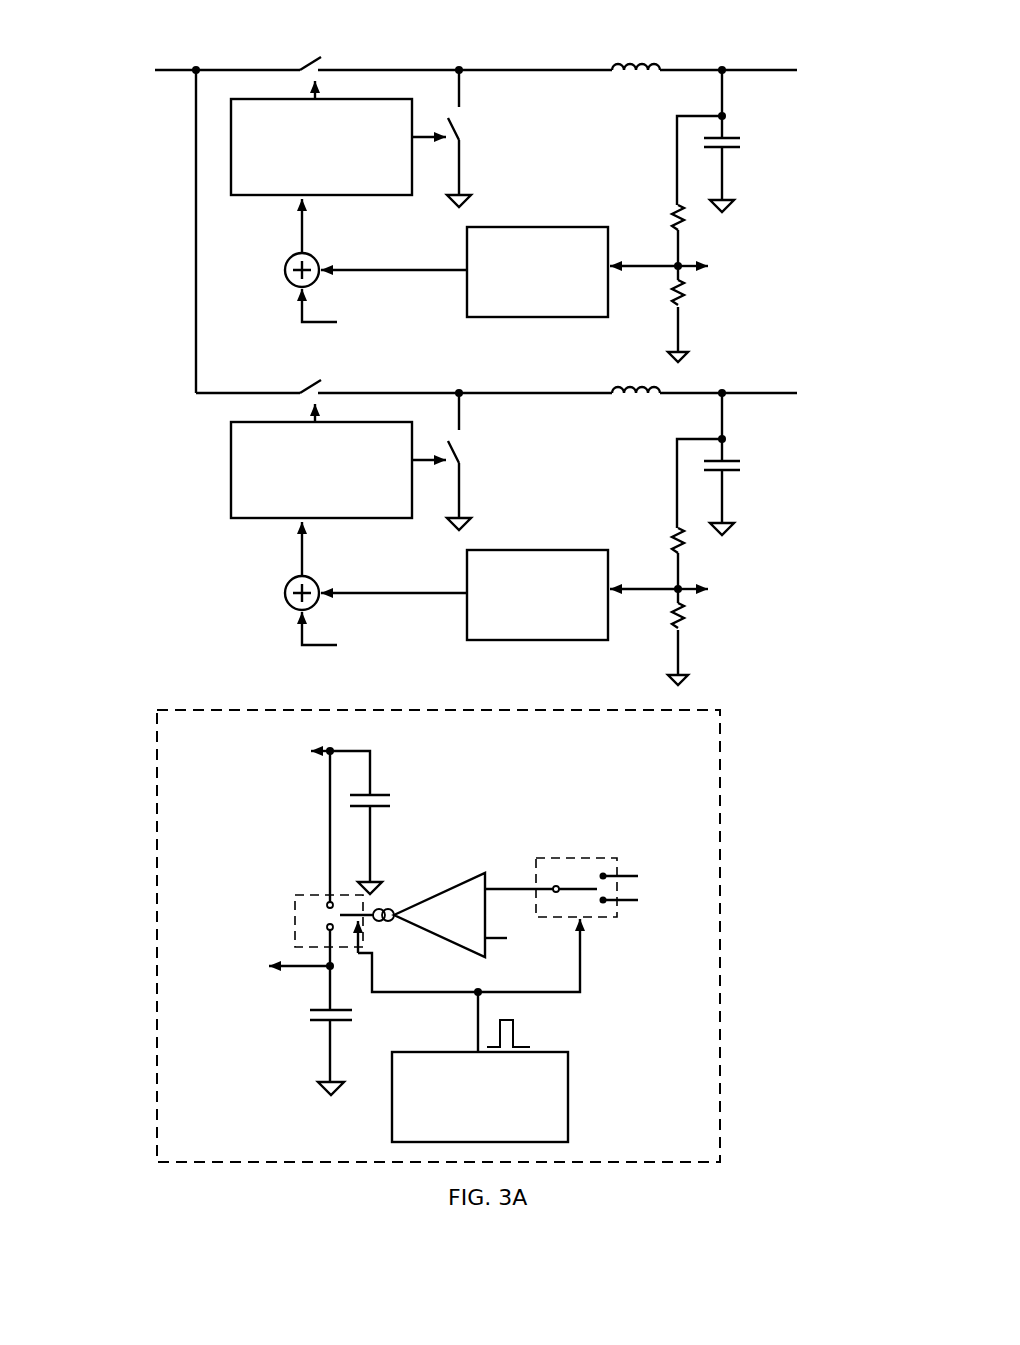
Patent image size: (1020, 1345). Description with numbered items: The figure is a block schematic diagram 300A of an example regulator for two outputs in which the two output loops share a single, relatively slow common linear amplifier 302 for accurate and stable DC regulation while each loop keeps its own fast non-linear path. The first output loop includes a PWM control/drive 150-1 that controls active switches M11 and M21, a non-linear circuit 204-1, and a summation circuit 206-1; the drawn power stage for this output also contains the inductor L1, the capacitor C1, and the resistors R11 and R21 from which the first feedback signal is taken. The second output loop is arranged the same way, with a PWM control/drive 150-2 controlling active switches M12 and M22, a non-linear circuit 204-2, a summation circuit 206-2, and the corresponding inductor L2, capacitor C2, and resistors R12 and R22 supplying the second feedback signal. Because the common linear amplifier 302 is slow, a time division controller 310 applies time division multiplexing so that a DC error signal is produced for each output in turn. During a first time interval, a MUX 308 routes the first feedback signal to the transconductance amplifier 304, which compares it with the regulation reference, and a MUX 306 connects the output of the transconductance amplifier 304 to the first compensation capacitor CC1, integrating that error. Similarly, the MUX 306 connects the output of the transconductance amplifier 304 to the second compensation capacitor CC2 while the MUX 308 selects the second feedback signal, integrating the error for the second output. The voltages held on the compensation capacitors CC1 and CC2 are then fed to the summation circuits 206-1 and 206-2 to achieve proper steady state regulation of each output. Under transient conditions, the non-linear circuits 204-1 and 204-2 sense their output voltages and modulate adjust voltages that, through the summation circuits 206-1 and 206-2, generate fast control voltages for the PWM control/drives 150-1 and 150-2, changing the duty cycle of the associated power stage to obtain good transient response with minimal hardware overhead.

The block schematic diagram 300A is at (172, 26).
The active switch M11 is at (313, 63).
The active switch M21 is at (462, 131).
The active switch M12 is at (324, 372).
The active switch M22 is at (475, 461).
The PWM control/drive 150-1 is at (321, 147).
The PWM control/drive 150-2 is at (321, 470).
The output inductor of first channel L1 is at (619, 76).
The output inductor of second channel L2 is at (636, 412).
The output capacitor of first channel C1 is at (737, 141).
The output capacitor of second channel C2 is at (737, 464).
The upper feedback resistor of first channel R11 is at (659, 223).
The lower feedback resistor of first channel R21 is at (661, 321).
The upper feedback resistor of second channel R12 is at (659, 546).
The lower feedback resistor of second channel R22 is at (661, 644).
The non-linear circuit 204-1 is at (537, 272).
The non-linear circuit 204-2 is at (537, 595).
The summation circuit 206-1 is at (291, 265).
The summation circuit 206-2 is at (282, 601).
The common linear amplifier 302 is at (718, 758).
The transconductance amplifier 304 is at (446, 892).
The MUX 306 is at (295, 900).
The MUX 308 is at (590, 863).
The time division controller 310 is at (480, 1081).
The first compensation capacitor CC1 is at (387, 842).
The second compensation capacitor CC2 is at (349, 1050).